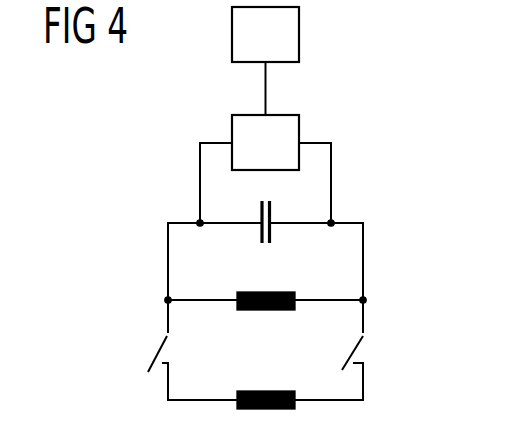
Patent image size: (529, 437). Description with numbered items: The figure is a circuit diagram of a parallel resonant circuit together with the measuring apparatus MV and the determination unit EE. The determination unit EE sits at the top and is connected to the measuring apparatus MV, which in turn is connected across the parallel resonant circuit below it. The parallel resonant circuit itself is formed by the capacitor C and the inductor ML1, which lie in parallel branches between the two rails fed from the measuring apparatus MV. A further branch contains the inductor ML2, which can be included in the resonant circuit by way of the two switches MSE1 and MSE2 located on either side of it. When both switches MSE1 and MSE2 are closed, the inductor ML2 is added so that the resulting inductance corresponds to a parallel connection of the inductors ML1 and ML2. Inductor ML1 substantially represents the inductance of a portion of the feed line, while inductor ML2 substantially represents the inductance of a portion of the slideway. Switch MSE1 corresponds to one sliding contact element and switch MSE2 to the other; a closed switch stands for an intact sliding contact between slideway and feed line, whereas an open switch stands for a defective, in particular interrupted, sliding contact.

The determination unit EE is at (299, 32).
The measuring apparatus MV is at (299, 126).
The capacitor C is at (272, 212).
The inductor ML1 is at (253, 290).
The inductor ML2 is at (266, 390).
The switch MSE1 is at (160, 350).
The switch MSE2 is at (352, 355).